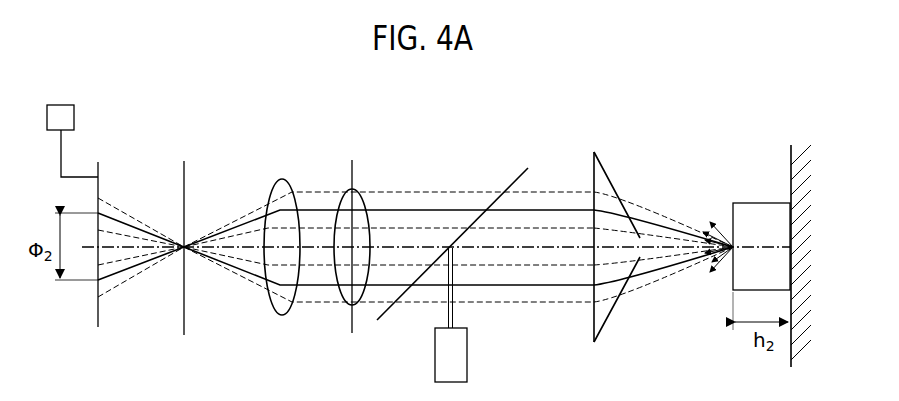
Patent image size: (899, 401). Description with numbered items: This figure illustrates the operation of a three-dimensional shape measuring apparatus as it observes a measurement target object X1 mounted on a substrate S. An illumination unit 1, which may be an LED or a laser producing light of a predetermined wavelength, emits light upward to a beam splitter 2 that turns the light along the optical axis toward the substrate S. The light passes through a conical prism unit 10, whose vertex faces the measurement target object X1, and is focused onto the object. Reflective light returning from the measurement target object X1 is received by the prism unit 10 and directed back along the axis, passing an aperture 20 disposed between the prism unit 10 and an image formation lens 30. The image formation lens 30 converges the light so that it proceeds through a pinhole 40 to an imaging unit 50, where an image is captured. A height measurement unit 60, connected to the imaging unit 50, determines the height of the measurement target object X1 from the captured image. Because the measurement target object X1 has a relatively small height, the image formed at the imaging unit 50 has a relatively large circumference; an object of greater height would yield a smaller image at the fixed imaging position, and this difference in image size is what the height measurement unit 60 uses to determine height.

The height measurement unit 60 is at (61, 105).
The imaging unit 50 is at (100, 187).
The pinhole 40 is at (187, 185).
The image formation lens 30 is at (277, 185).
The aperture 20 is at (367, 205).
The beam splitter 2 is at (507, 187).
The illumination unit 1 is at (467, 353).
The prism unit 10 is at (593, 170).
The measurement target object X1 is at (760, 203).
The substrate S is at (809, 256).